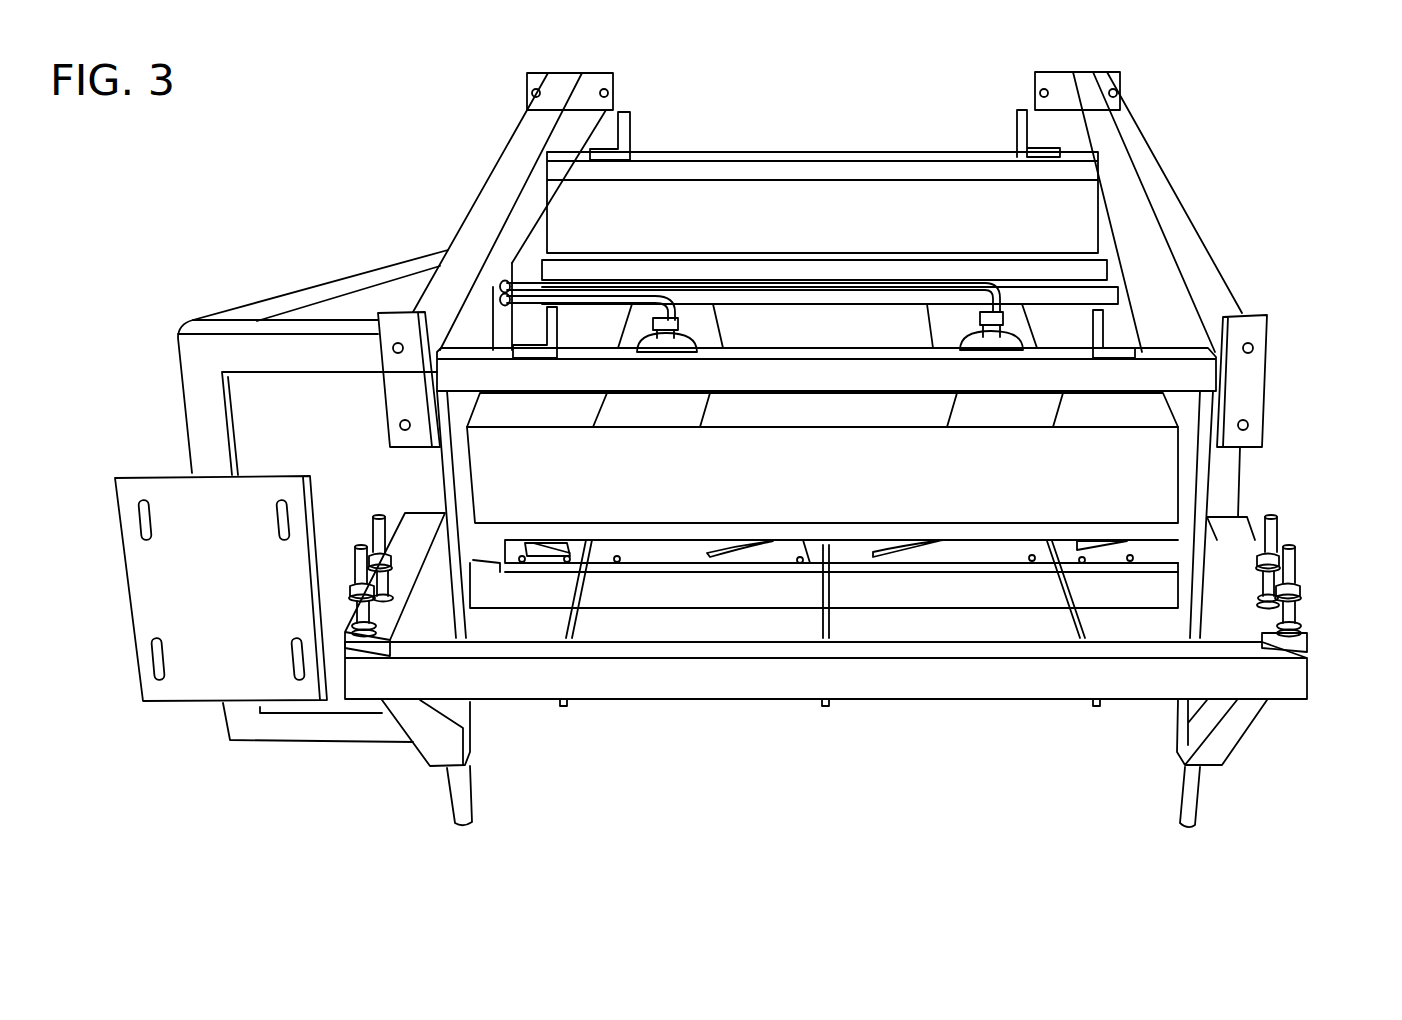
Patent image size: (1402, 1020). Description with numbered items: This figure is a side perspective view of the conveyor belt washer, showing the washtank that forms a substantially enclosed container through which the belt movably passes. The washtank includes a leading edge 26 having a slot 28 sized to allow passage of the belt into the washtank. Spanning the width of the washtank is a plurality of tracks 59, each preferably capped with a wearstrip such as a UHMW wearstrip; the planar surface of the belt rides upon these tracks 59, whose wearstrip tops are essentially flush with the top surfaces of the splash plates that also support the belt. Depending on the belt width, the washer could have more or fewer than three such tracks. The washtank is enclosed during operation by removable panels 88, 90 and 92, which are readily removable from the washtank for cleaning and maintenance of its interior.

The leading edge 26 is at (1133, 468).
The slot 28 is at (693, 552).
The tracks 59 is at (582, 592).
The removable panel 88 is at (605, 320).
The removable panel 90 is at (805, 320).
The removable panel 92 is at (1062, 320).